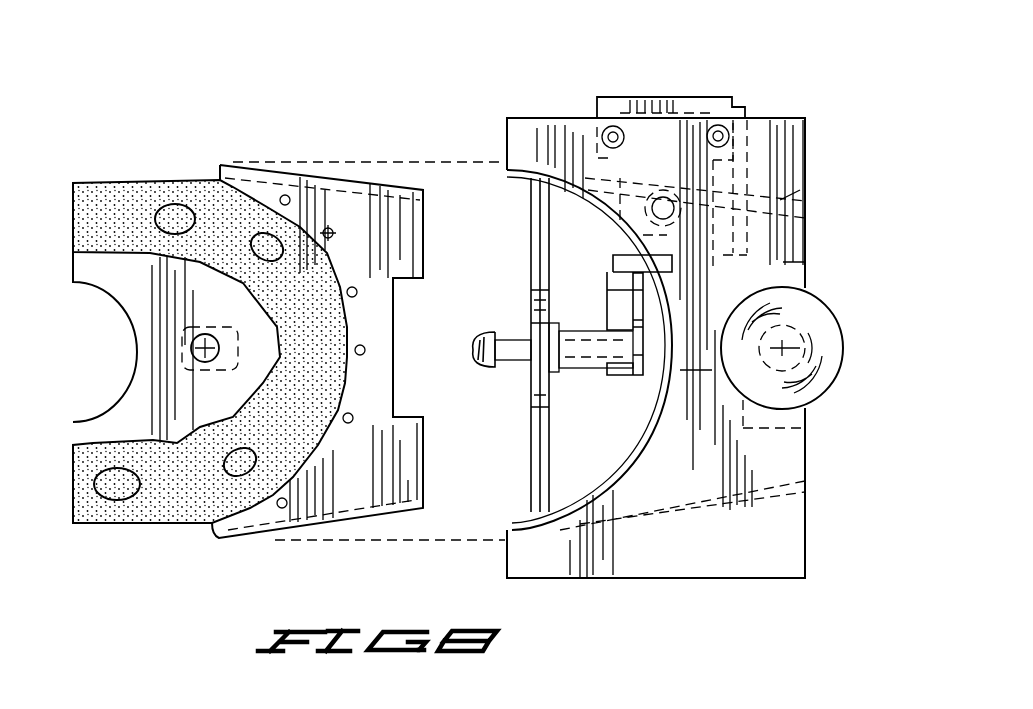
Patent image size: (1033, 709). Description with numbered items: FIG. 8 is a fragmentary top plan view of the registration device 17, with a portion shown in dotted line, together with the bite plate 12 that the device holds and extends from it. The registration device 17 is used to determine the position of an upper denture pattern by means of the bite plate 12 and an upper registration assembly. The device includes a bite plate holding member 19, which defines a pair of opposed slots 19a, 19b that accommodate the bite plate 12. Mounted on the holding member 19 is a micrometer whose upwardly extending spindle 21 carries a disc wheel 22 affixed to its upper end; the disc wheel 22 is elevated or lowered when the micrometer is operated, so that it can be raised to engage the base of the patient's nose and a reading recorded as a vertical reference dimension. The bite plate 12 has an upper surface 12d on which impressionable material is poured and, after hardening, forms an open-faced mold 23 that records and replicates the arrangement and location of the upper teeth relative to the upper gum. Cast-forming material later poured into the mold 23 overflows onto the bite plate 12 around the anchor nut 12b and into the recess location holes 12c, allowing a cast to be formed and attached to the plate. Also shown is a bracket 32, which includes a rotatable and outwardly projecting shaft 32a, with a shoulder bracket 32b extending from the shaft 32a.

The bite plate 12 is at (387, 182).
The anchor nut 12b is at (180, 350).
The recess location holes 12c is at (183, 487).
The upper surface 12d is at (358, 483).
The registration device 17 is at (708, 84).
The bite plate holding member 19 is at (795, 163).
The slot 19a is at (800, 190).
The slot 19b is at (768, 498).
The spindle 21 is at (805, 348).
The disc wheel 22 is at (838, 325).
The open-faced mold 23 is at (133, 196).
The bracket 32 is at (645, 380).
The shaft 32a is at (520, 338).
The shoulder bracket 32b is at (531, 240).